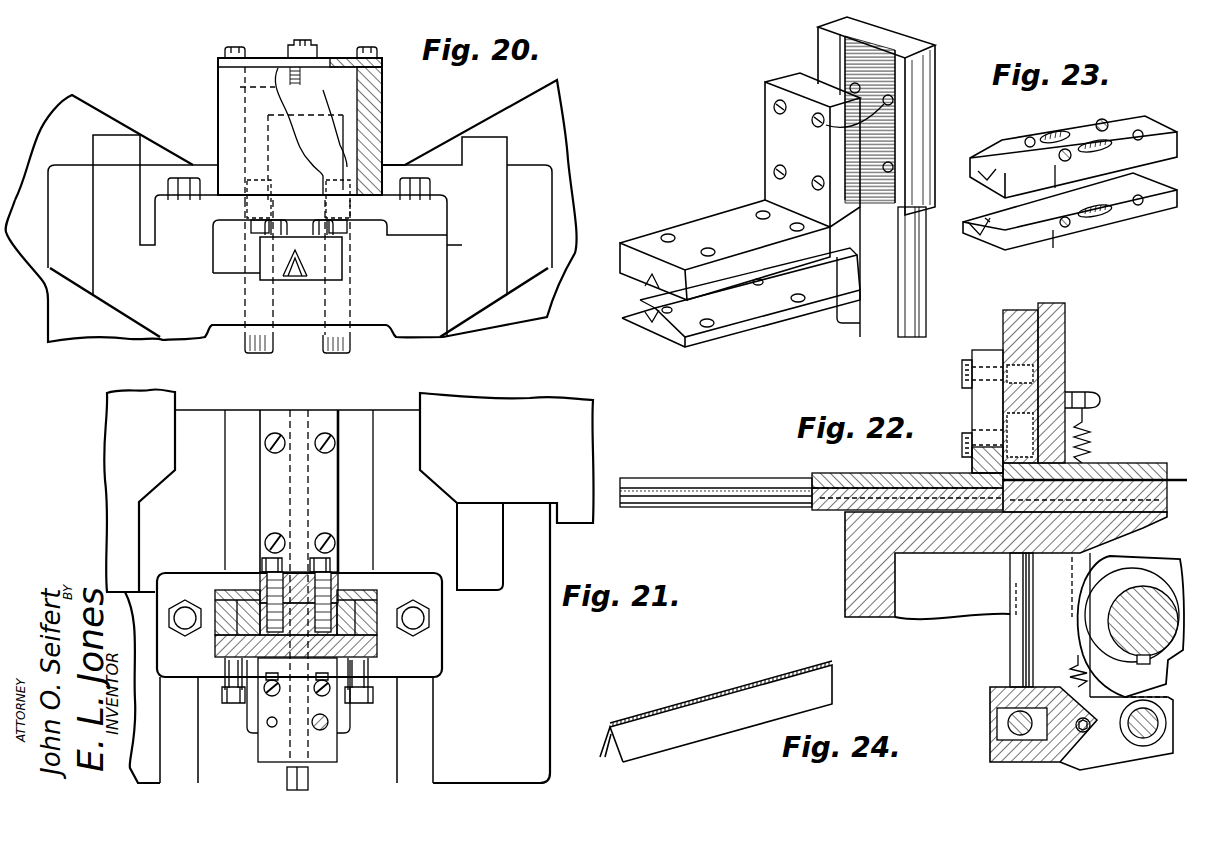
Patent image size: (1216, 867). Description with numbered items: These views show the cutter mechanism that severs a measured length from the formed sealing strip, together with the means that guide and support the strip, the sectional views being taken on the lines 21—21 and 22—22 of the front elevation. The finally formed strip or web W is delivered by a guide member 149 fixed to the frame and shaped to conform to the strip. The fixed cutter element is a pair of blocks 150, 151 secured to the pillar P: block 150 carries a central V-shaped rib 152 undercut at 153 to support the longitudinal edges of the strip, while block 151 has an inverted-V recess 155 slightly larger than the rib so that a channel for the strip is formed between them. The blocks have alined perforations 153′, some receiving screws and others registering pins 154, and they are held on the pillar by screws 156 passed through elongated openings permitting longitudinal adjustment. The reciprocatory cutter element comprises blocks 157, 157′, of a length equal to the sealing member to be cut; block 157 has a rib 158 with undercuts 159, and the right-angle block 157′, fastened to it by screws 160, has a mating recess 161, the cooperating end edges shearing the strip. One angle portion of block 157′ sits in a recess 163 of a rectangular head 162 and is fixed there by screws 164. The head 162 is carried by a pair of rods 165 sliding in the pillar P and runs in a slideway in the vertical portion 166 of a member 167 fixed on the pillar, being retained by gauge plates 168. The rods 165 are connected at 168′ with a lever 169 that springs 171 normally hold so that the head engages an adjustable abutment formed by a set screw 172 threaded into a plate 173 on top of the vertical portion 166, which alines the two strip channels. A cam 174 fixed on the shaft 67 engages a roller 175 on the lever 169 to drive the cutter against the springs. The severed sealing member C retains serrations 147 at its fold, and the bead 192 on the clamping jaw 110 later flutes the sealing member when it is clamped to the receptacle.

In FIG. 20, the section line 21— 21 is at (170, 127).
In FIG. 20, the section line 22— 22 is at (288, 17).
In FIG. 22, the shaft 67 is at (1130, 603).
In FIG. 22, the clamping jaw 110 is at (707, 478).
In FIG. 24, the serrations 147 is at (685, 707).
In FIG. 21, the guide member 149 is at (287, 778).
In FIG. 20, the block 150 is at (312, 277).
In FIG. 23, the block 150 is at (1165, 210).
In FIG. 22, the block 150 is at (1150, 513).
In FIG. 20, the block 151 is at (333, 255).
In FIG. 21, the block 151 is at (270, 747).
In FIG. 23, the block 151 is at (1100, 124).
In FIG. 22, the block 151 is at (1117, 463).
In FIG. 20, the rib 152 is at (288, 280).
In FIG. 23, the rib 152 is at (990, 222).
In FIG. 23, the undercut 153 is at (980, 236).
In FIG. 23, the alined perforations 153′ is at (1138, 130).
In FIG. 21, the registering pins 154 is at (278, 726).
In FIG. 20, the recess 155 is at (298, 270).
In FIG. 23, the recess 155 is at (975, 178).
In FIG. 21, the screws 156 is at (318, 696).
In FIG. 23, the screws 156 is at (1068, 129).
In FIG. 23, the block 157 is at (693, 347).
In FIG. 22, the block 157 is at (815, 510).
In FIG. 20, the cutter block 157′ is at (333, 130).
In FIG. 21, the cutter block 157′ is at (327, 505).
In FIG. 23, the cutter block 157′ is at (712, 225).
In FIG. 22, the cutter block 157′ is at (913, 472).
In FIG. 23, the rib 158 is at (650, 311).
In FIG. 23, the undercut 159 is at (652, 322).
In FIG. 21, the screws 160 is at (270, 535).
In FIG. 23, the screws 160 is at (760, 216).
In FIG. 23, the recess 161 is at (645, 283).
In FIG. 20, the head 162 is at (318, 103).
In FIG. 21, the head 162 is at (245, 620).
In FIG. 23, the head 162 is at (933, 83).
In FIG. 22, the head 162 is at (1020, 315).
In FIG. 23, the recess 163 is at (835, 52).
In FIG. 21, the screws 164 is at (262, 565).
In FIG. 23, the screws 164 is at (800, 136).
In FIG. 20, the rods 165 is at (323, 343).
In FIG. 23, the rods 165 is at (905, 322).
In FIG. 22, the rods 165 is at (1010, 645).
In FIG. 20, the vertical portion 166 is at (218, 94).
In FIG. 21, the vertical portion 166 is at (372, 646).
In FIG. 22, the vertical portion 166 is at (1057, 350).
In FIG. 21, the member 167 is at (442, 612).
In FIG. 21, the gauge plates 168 is at (220, 596).
In FIG. 22, the gauge plates 168 is at (1000, 335).
In FIG. 22, the connection 168′ is at (1010, 703).
In FIG. 22, the lever 169 is at (1089, 732).
In FIG. 21, the springs 171 is at (235, 703).
In FIG. 22, the springs 171 is at (1091, 432).
In FIG. 20, the set screw 172 is at (318, 50).
In FIG. 20, the plate 173 is at (260, 62).
In FIG. 22, the cam 174 is at (1144, 668).
In FIG. 22, the roller 175 is at (1143, 740).
In FIG. 22, the bead 192 is at (650, 503).
In FIG. 20, the pillar P is at (291, 211).
In FIG. 21, the pillar P is at (528, 688).
In FIG. 22, the pillar P is at (860, 568).
In FIG. 21, the work W is at (308, 780).
In FIG. 22, the work W is at (848, 476).
In FIG. 24, the sealing member C is at (730, 703).